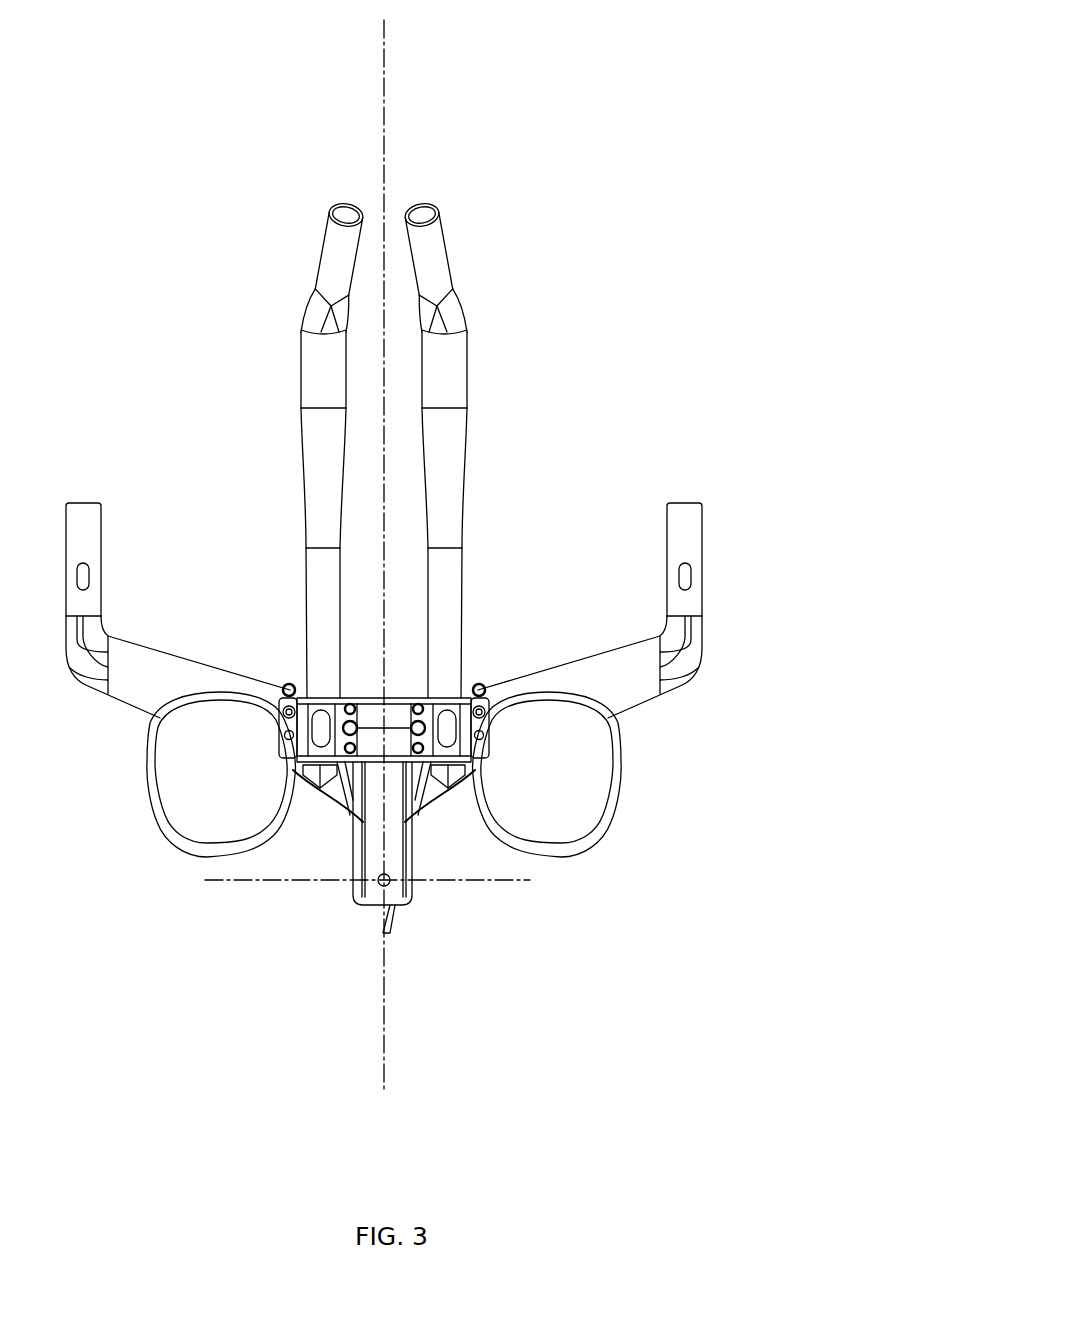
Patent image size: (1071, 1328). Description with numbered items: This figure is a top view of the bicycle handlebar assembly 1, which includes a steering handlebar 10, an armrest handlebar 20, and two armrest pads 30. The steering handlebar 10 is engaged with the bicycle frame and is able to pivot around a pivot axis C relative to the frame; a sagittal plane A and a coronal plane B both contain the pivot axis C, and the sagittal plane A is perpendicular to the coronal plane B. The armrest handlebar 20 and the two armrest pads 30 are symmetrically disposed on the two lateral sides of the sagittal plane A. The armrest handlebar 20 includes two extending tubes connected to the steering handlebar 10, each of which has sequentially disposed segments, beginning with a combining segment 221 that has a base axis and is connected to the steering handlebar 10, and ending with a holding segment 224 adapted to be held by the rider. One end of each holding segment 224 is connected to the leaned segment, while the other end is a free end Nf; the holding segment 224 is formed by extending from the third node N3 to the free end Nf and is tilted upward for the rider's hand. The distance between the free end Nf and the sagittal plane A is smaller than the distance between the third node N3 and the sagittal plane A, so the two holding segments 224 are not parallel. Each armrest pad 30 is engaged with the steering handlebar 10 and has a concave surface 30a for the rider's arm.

The bicycle handlebar assembly 1 is at (668, 136).
The steering handlebar 10 is at (707, 557).
The armrest handlebar 20 is at (485, 397).
The combining segment 221 is at (442, 603).
The holding segment 224 is at (435, 255).
The third node N3 is at (447, 323).
The free end Nf is at (420, 212).
The armrest pad 30 is at (467, 837).
The concave surface 30a is at (567, 827).
The sagittal plane A is at (382, 573).
The coronal plane B is at (352, 881).
The pivot axis C is at (378, 885).